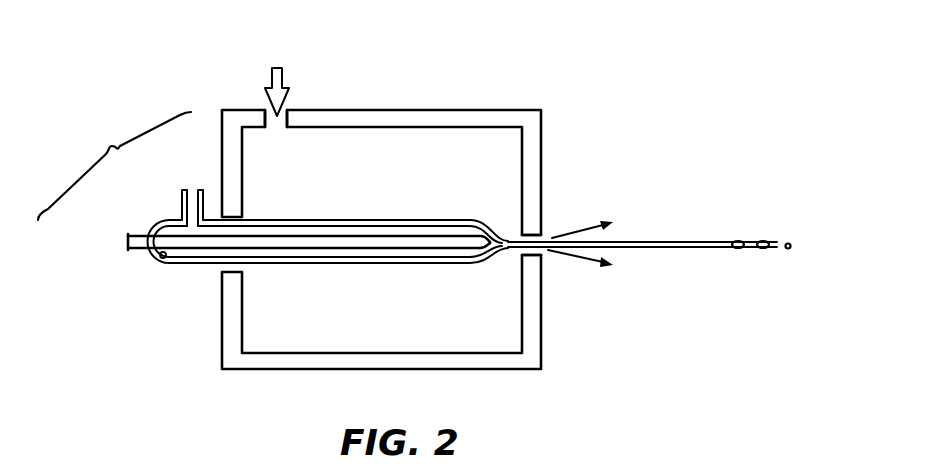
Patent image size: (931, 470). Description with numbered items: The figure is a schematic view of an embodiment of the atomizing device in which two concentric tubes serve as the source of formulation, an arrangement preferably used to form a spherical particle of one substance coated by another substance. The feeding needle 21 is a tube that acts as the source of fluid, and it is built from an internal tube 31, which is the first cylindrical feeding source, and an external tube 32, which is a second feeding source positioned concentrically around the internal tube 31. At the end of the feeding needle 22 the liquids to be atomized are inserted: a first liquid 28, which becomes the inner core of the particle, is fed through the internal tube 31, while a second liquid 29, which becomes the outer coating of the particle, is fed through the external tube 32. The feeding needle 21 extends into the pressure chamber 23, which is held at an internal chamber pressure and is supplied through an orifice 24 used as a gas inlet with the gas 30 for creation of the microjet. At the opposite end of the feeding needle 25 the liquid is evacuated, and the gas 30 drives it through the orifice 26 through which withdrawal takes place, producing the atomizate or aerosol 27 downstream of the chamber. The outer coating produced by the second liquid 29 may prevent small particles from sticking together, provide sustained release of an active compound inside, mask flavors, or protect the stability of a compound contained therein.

The feeding needle 21 is at (325, 220).
The end of the feeding needle 22 is at (114, 166).
The pressure chamber 23 is at (471, 341).
The orifice used as gas inlet 24 is at (287, 111).
The end of the feeding needle 25 is at (522, 234).
The orifice through which withdrawal takes place 26 is at (548, 236).
The atomizate or aerosol 27 is at (806, 224).
The first liquid to be atomized 28 is at (118, 241).
The second liquid to be atomized 29 is at (193, 178).
The gas for creation of microjet 30 is at (271, 70).
The internal tube of feeding needle 31 is at (160, 265).
The external tube of feeding needle 32 is at (201, 264).